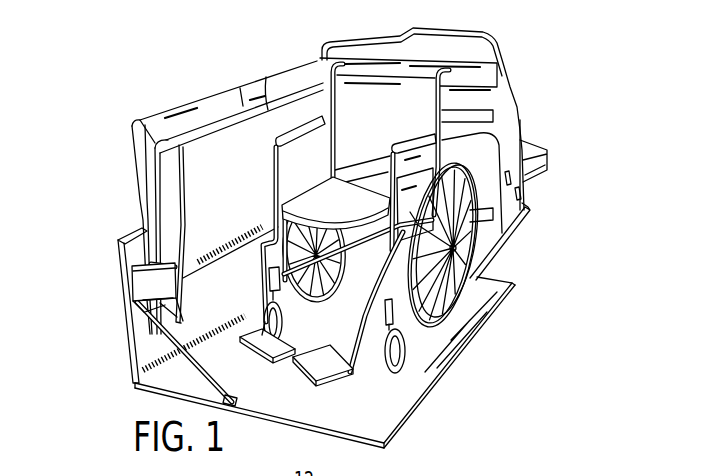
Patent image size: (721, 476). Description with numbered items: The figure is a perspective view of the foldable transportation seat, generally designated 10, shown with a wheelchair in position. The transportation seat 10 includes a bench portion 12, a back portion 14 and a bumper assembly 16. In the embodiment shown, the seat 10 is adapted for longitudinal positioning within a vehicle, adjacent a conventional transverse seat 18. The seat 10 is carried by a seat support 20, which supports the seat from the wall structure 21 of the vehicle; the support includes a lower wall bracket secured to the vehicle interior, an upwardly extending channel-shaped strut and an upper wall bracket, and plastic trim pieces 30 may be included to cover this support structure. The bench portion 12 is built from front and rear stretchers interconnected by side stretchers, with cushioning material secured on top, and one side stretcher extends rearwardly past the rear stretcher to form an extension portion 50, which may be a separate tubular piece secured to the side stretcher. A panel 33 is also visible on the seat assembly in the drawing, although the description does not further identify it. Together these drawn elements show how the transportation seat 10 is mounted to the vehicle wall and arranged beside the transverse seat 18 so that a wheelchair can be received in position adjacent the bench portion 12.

The transportation seat 10 is at (165, 64).
The bench portion 12 is at (277, 108).
The back portion 14 is at (126, 143).
The bumper assembly 16 is at (487, 147).
The conventional transverse seat 18 is at (515, 53).
The seat support 20 is at (142, 303).
The wall structure 21 is at (119, 240).
The plastic trim pieces 30 is at (143, 288).
The side panel 33 is at (227, 199).
The extension portion 50 is at (186, 311).